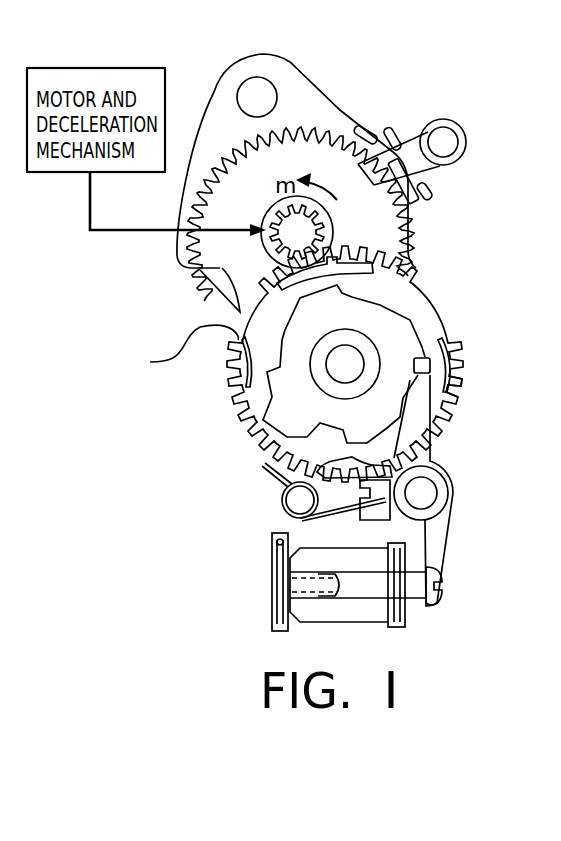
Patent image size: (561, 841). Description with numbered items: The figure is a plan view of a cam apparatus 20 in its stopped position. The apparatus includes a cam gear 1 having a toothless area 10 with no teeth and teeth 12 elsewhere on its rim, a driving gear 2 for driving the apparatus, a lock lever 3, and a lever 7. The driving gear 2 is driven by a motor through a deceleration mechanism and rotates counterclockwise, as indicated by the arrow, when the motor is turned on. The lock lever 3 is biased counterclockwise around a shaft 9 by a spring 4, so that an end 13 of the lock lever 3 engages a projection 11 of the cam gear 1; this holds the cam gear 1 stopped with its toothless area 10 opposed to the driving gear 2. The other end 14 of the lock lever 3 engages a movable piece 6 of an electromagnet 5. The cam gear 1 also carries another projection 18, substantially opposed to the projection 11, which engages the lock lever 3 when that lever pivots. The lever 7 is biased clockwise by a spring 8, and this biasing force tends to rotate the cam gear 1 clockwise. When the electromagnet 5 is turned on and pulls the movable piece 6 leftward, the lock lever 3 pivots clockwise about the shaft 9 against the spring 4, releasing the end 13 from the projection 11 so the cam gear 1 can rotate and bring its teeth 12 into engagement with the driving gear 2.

The cam gear 1 is at (257, 402).
The driving gear 2 is at (270, 212).
The lock lever 3 is at (455, 482).
The spring 4 is at (277, 502).
The electromagnet 5 is at (343, 620).
The movable piece 6 is at (411, 592).
The lever 7 is at (297, 86).
The spring 8 is at (437, 163).
The shaft 9 is at (437, 498).
The toothless area 10 is at (283, 276).
The projection 11 is at (427, 357).
The teeth 12 is at (152, 362).
The end 13 is at (460, 387).
The other end 14 is at (442, 598).
The projection 18 is at (448, 338).
The cam apparatus 20 is at (380, 86).